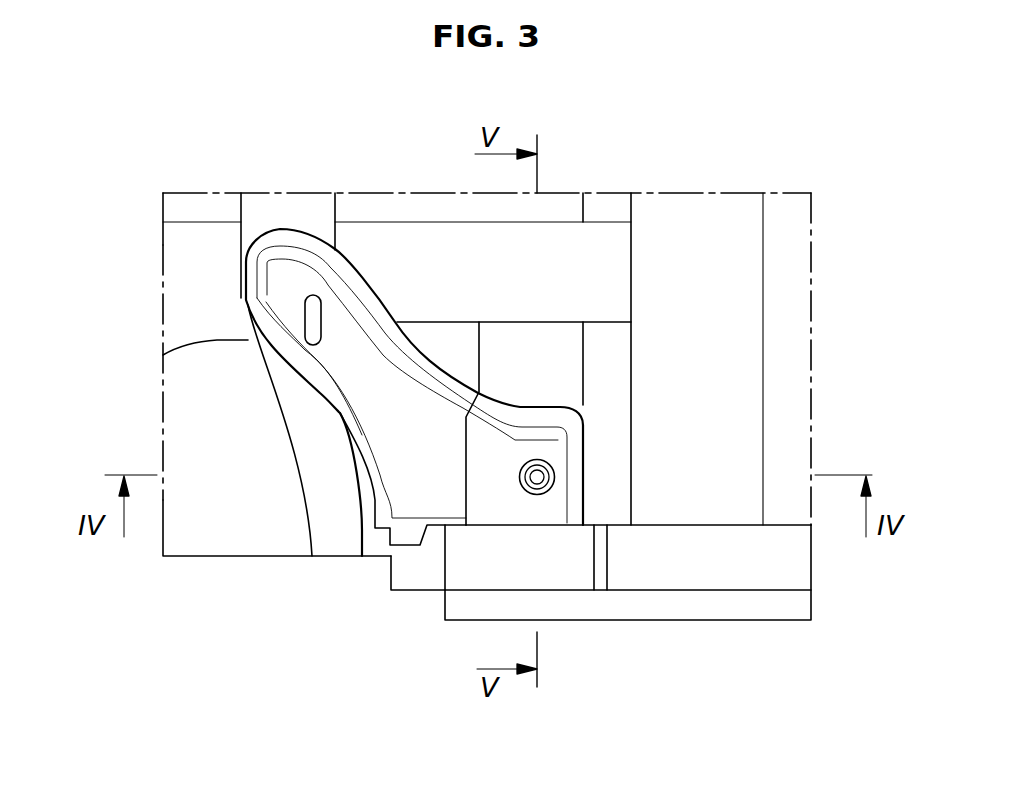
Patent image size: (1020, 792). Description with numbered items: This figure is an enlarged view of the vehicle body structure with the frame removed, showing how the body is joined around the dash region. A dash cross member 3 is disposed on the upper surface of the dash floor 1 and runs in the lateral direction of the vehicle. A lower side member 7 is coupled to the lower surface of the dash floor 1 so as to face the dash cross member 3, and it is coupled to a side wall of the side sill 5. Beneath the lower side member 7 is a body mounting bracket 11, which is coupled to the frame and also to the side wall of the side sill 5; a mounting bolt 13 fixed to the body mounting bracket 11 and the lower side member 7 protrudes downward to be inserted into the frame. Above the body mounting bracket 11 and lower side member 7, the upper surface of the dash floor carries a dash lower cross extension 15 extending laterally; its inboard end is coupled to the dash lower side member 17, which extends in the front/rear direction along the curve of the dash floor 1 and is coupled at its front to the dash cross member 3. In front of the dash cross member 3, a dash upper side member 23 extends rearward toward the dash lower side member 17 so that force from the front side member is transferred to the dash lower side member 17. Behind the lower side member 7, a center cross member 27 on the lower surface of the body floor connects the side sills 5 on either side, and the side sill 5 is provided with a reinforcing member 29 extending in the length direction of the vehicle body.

The dash floor 1 is at (208, 415).
The dash cross member 3 is at (283, 208).
The side sill 5 is at (497, 567).
The lower side member 7 is at (402, 432).
The body mounting bracket 11 is at (487, 497).
The mounting bolt 13 is at (537, 480).
The dash lower cross extension 15 is at (553, 366).
The dash lower side member 17 is at (427, 238).
The dash upper side member 23 is at (195, 279).
The center cross member 27 is at (705, 228).
The reinforcing member 29 is at (718, 602).